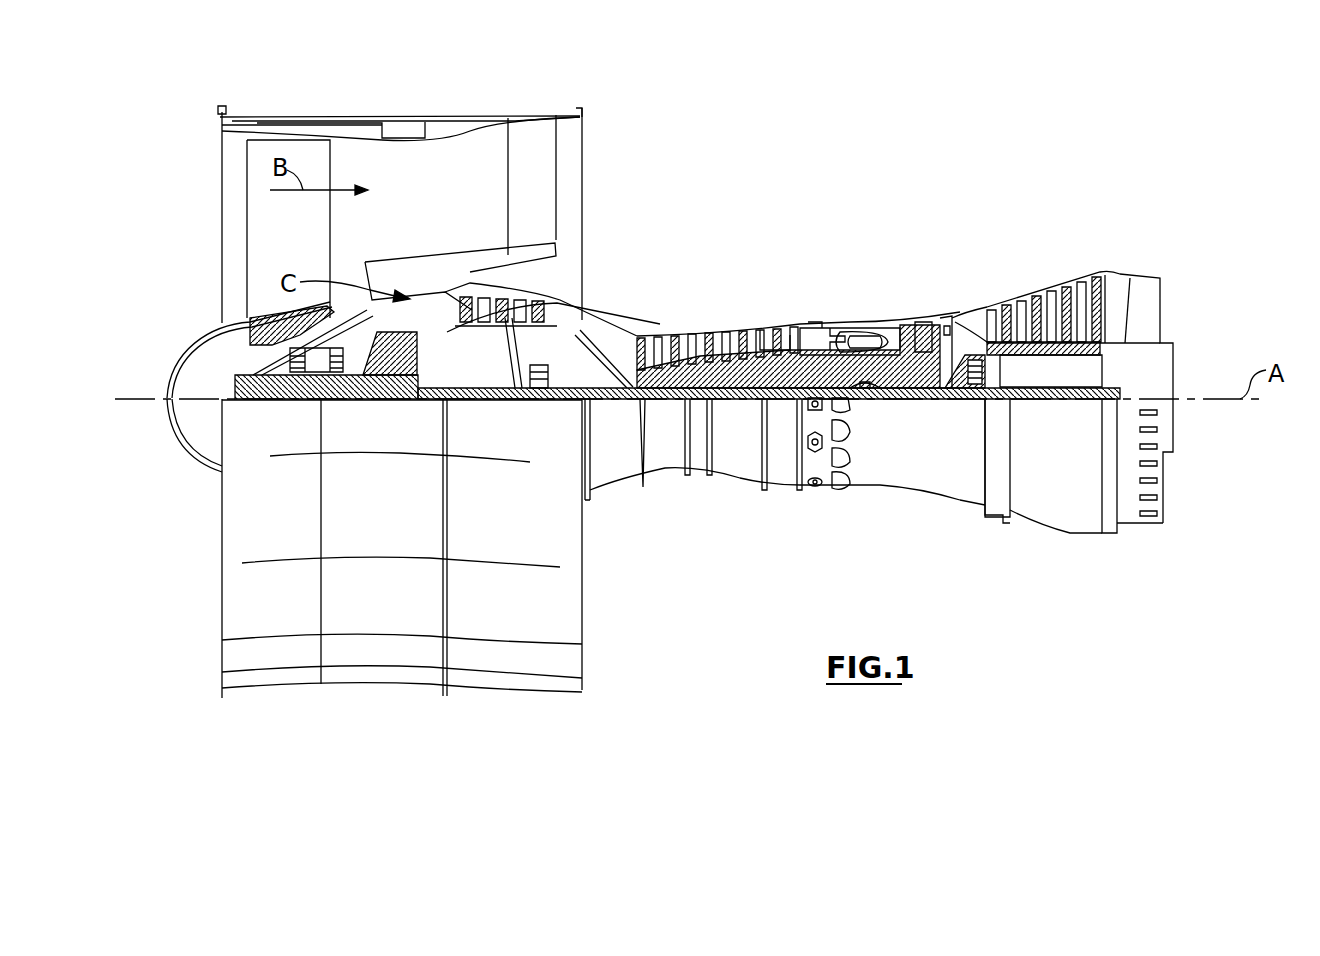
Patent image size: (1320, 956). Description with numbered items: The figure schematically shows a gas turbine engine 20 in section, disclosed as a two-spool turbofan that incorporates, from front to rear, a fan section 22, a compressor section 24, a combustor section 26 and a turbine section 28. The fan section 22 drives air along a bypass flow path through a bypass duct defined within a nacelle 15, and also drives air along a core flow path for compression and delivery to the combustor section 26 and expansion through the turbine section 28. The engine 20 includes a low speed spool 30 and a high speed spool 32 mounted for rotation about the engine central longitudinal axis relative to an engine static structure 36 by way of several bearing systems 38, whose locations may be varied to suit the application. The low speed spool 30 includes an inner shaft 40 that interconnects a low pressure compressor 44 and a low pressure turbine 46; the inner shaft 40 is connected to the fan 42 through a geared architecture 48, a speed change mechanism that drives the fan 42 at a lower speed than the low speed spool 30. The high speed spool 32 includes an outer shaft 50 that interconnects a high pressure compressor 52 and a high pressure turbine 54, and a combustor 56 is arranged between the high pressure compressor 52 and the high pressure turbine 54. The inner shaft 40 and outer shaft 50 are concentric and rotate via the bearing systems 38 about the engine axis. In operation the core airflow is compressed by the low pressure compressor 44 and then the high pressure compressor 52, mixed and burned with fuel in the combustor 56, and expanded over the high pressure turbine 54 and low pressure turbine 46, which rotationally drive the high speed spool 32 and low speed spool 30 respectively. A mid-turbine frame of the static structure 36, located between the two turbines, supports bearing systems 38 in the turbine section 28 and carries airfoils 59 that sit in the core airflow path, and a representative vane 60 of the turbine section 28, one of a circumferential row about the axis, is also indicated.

The nacelle 15 is at (395, 117).
The gas turbine engine 20 is at (872, 152).
The fan section 22 is at (330, 98).
The compressor section 24 is at (636, 300).
The combustor section 26 is at (852, 286).
The turbine section 28 is at (1002, 249).
The low speed spool 30 is at (741, 410).
The high speed spool 32 is at (786, 352).
The engine static structure 36 is at (780, 500).
The bearing systems 38 is at (542, 380).
The inner shaft 40 is at (598, 405).
The fan 42 is at (306, 246).
The low pressure compressor 44 is at (507, 308).
The low pressure turbine 46 is at (1050, 283).
The geared architecture 48 is at (410, 380).
The outer shaft 50 is at (866, 386).
The high pressure compressor 52 is at (714, 330).
The high pressure turbine 54 is at (921, 345).
The combustor 56 is at (856, 338).
The airfoils 59 is at (990, 362).
The vane 60 is at (968, 298).